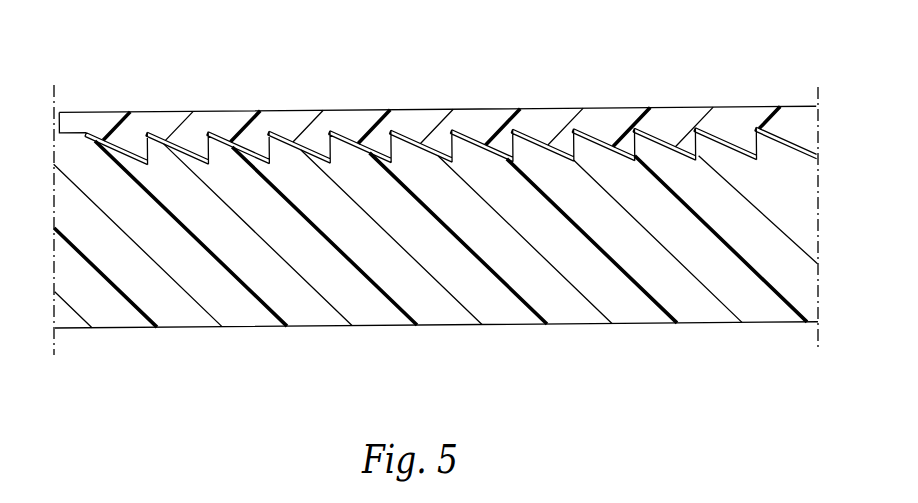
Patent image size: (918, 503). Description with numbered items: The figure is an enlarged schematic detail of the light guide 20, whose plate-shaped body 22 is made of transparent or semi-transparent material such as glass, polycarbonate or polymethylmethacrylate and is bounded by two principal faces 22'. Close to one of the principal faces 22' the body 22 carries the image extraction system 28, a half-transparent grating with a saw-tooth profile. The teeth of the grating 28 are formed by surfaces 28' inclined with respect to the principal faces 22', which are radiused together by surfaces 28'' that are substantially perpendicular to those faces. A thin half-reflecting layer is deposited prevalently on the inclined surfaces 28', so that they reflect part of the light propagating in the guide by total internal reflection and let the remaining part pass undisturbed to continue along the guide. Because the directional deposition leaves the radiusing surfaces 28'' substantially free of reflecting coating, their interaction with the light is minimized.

The light guide 20 is at (724, 107).
The plate-shaped body 22 is at (435, 262).
The principal faces 22' is at (435, 209).
The image extraction system 28 is at (451, 201).
The inclined surfaces 28' is at (430, 205).
The radiusing surfaces 28'' is at (439, 99).